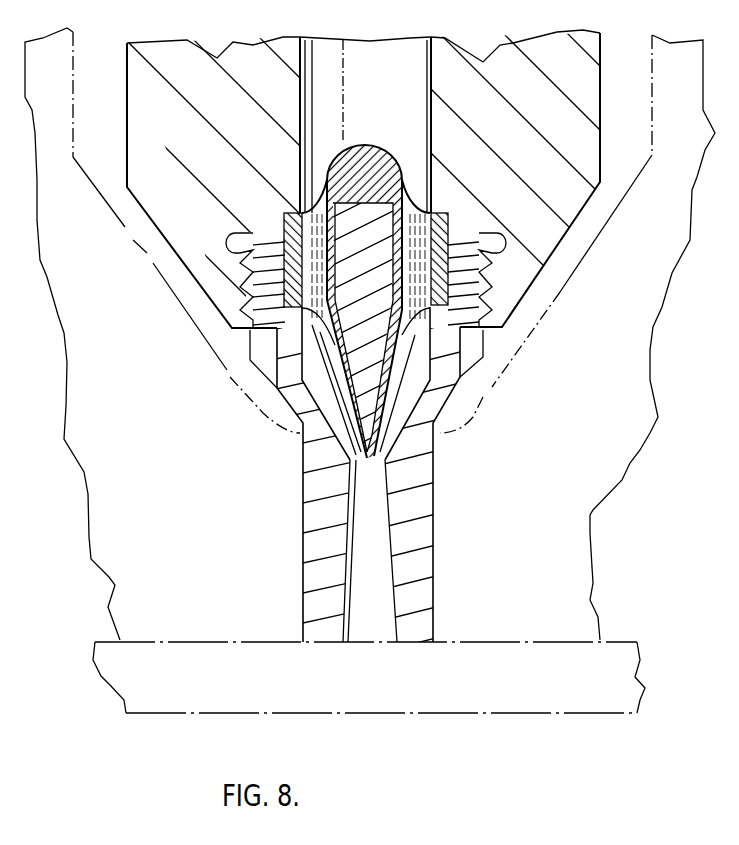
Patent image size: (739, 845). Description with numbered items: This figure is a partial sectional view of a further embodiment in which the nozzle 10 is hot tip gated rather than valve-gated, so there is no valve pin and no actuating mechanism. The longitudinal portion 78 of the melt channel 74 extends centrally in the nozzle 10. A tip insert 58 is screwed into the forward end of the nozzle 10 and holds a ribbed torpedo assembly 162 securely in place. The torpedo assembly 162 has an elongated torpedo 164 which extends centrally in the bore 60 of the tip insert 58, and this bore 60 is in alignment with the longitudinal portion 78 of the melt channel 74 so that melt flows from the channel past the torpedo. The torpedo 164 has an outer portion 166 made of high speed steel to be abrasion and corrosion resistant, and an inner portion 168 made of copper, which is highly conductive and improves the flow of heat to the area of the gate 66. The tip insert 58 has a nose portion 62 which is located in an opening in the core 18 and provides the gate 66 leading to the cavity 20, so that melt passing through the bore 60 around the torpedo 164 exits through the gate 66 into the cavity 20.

The nozzle 10 is at (583, 88).
The core 18 is at (580, 562).
The cavity 20 is at (622, 647).
The tip insert 58 is at (420, 485).
The bore 60 is at (310, 377).
The nose portion 62 is at (423, 527).
The gate 66 is at (372, 630).
The melt channel 74 is at (388, 52).
The longitudinal portion 78 is at (417, 140).
The torpedo assembly 162 is at (465, 243).
The torpedo 164 is at (382, 330).
The outer portion 166 is at (400, 427).
The inner portion 168 is at (397, 340).